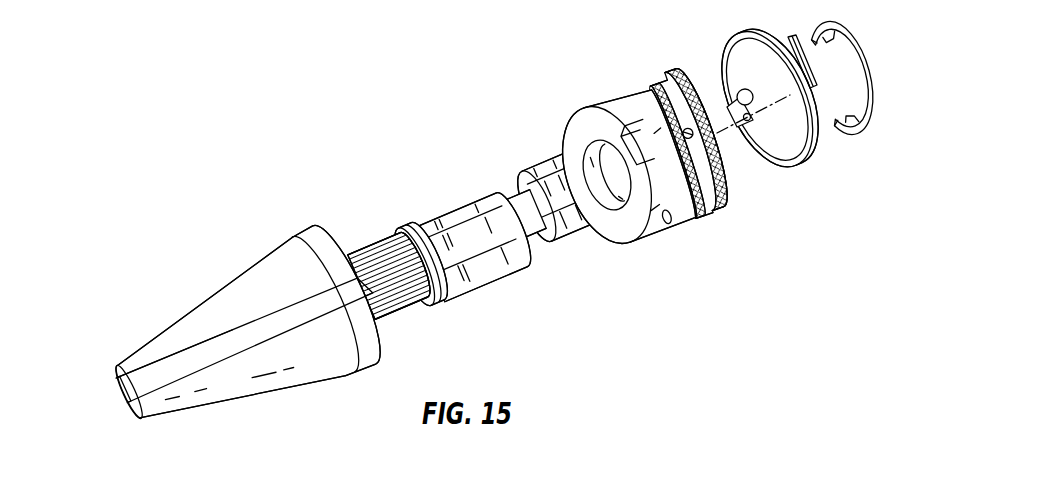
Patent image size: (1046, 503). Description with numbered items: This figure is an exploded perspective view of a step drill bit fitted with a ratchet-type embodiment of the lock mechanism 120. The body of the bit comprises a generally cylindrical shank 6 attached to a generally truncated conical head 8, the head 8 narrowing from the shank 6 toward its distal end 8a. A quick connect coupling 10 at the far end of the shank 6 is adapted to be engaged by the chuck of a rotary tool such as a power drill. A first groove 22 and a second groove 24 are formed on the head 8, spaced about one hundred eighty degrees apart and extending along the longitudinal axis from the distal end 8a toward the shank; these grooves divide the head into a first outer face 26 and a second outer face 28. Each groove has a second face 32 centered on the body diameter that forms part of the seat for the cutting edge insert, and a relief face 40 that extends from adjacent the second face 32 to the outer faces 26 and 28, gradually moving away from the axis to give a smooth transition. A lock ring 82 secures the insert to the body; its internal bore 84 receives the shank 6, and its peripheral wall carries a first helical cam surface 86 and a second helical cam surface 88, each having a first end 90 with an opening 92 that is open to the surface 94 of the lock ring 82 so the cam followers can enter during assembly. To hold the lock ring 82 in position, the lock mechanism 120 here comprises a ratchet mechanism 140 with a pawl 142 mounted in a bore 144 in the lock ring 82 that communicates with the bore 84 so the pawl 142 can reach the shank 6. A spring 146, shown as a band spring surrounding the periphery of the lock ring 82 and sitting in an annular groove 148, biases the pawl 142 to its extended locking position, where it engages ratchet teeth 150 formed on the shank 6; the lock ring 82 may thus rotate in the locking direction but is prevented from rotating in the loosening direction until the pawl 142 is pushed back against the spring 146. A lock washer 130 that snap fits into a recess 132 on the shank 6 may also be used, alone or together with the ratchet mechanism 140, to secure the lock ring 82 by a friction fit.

The shank 6 is at (454, 197).
The head 8 is at (232, 319).
The distal end 8a is at (125, 399).
The quick connect coupling 10 is at (538, 253).
The first groove 22 is at (112, 395).
The second groove 24 is at (222, 350).
The first outer face 26 is at (292, 379).
The second outer face 28 is at (231, 282).
The second face 32 is at (177, 363).
The relief face 40 is at (309, 257).
The lock ring 82 is at (712, 151).
The internal bore 84 is at (600, 170).
The first helical cam surface 86 is at (597, 107).
The second helical cam surface 88 is at (647, 243).
The first end 90 is at (636, 144).
The opening 92 is at (641, 157).
The surface 94 is at (608, 174).
The lock mechanism 120 is at (766, 147).
The lock washer 130 is at (868, 113).
The recess 132 is at (433, 288).
The ratchet mechanism 140 is at (741, 145).
The pawl 142 is at (730, 103).
The bore 144 is at (662, 82).
The spring 146 is at (797, 167).
The annular groove 148 is at (706, 181).
The ratchet teeth 150 is at (387, 250).